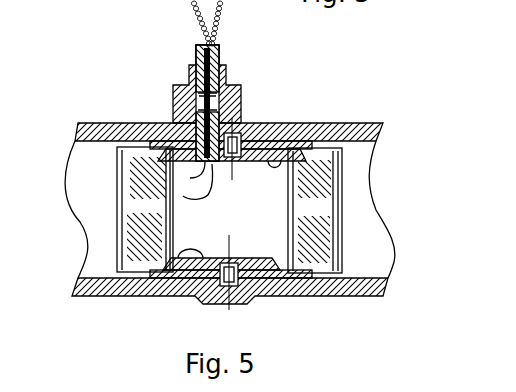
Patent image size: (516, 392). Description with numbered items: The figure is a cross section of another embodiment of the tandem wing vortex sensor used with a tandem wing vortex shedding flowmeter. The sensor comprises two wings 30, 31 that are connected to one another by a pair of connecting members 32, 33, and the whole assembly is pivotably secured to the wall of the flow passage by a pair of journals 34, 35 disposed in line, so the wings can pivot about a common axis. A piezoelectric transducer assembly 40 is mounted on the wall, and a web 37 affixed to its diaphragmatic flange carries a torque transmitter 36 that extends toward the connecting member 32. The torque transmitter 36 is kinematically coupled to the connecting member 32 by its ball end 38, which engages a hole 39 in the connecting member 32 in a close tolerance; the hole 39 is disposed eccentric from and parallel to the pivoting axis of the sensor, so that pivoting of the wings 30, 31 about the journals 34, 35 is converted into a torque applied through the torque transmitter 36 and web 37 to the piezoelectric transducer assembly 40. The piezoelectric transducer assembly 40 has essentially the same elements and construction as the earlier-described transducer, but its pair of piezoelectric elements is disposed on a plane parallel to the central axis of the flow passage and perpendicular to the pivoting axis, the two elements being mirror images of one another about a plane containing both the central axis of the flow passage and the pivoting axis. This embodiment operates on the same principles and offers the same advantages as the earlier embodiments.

The wing 30 is at (136, 208).
The wing 31 is at (316, 213).
The connecting member 32 is at (303, 125).
The connecting member 33 is at (203, 276).
The journal 34 is at (272, 147).
The journal 35 is at (268, 272).
The torque transmitter 36 is at (195, 137).
The web 37 is at (240, 140).
The ball end 38 is at (190, 178).
The hole 39 is at (183, 196).
The piezoelectric transducer assembly 40 is at (175, 100).